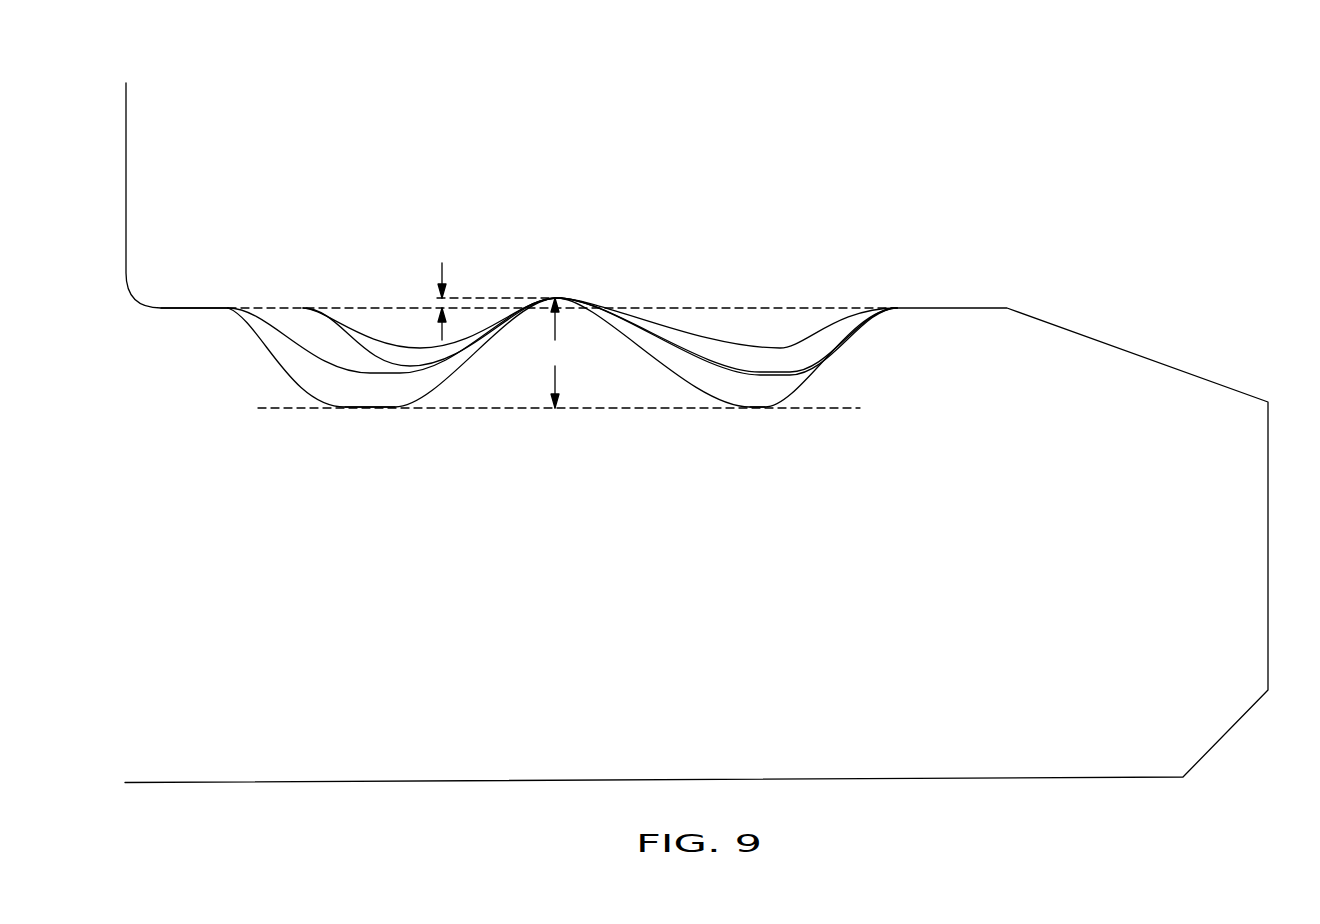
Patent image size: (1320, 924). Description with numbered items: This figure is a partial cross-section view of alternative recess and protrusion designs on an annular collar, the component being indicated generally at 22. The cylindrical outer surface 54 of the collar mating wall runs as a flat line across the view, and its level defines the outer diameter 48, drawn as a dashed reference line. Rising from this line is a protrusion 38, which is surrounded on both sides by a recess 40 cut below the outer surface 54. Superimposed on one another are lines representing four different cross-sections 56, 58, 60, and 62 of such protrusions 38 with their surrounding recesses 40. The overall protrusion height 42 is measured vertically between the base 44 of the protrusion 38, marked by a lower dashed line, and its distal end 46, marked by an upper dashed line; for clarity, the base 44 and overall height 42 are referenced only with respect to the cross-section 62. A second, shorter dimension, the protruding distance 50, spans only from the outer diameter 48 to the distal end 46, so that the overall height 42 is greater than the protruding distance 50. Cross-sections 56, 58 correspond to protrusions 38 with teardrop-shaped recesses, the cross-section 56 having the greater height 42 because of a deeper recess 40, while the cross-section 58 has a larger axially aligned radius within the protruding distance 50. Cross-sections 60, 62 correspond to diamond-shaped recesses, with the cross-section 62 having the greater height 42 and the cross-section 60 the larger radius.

The cylinder liner 22 is at (1212, 332).
The protrusion 38 is at (538, 318).
The recess 40 is at (740, 328).
The overall protrusion height 42 is at (556, 353).
The base 44 is at (565, 409).
The distal end 46 is at (557, 297).
The outer diameter 48 is at (752, 307).
The protruding distance 50 is at (442, 263).
The cylindrical outer surface 54 is at (965, 307).
The cross-section 56 is at (346, 336).
The cross-section 58 is at (342, 327).
The cross-section 60 is at (307, 360).
The cross-section 62 is at (415, 406).